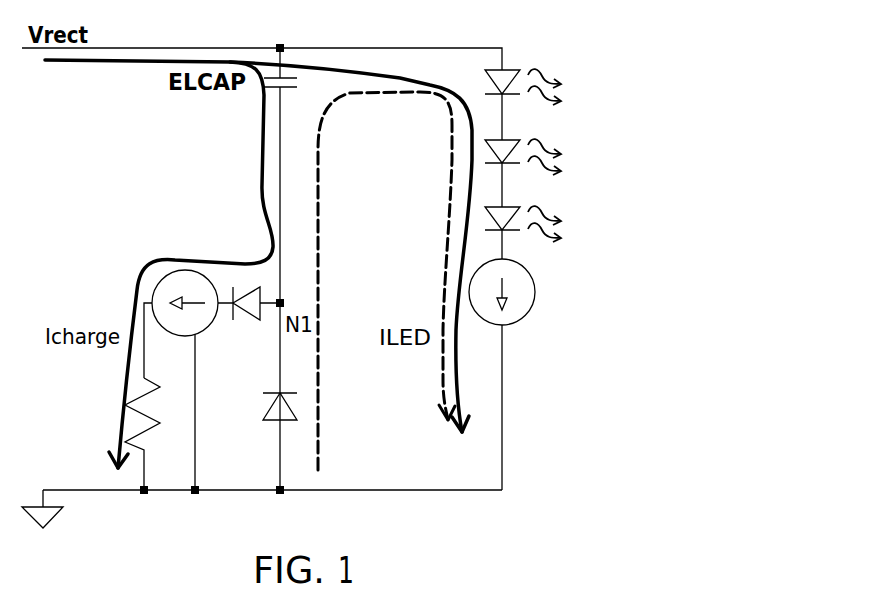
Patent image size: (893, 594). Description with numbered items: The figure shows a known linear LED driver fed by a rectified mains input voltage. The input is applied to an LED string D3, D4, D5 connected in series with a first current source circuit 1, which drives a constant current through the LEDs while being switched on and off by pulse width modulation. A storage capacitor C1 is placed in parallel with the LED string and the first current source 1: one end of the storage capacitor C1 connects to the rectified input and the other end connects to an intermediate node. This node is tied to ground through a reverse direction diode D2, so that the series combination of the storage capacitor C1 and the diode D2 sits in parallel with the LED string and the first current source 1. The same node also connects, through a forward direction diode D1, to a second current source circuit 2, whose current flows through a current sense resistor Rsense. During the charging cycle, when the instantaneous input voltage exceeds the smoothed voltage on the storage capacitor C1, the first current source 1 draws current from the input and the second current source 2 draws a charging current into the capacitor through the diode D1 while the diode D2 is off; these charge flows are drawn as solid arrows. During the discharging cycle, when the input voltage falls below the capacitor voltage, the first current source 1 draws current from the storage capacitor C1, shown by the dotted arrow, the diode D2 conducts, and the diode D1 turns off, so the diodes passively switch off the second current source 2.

The first current source circuit 1 is at (528, 313).
The second current source circuit 2 is at (160, 280).
The storage capacitor C1 is at (288, 84).
The forward direction diode D1 is at (249, 289).
The reverse direction diode D2 is at (269, 388).
The LED D3 is at (523, 87).
The LED D4 is at (523, 156).
The LED D5 is at (523, 215).
The current sense resistor Rsense is at (93, 434).